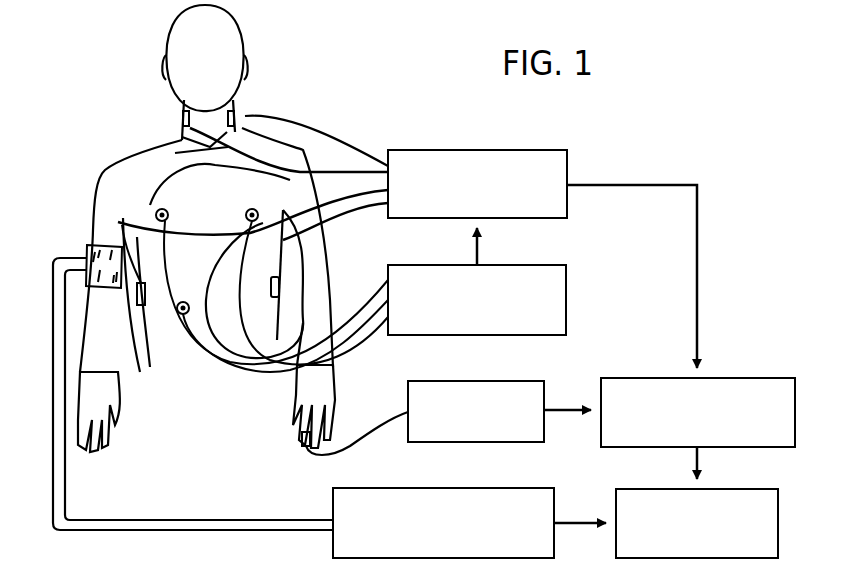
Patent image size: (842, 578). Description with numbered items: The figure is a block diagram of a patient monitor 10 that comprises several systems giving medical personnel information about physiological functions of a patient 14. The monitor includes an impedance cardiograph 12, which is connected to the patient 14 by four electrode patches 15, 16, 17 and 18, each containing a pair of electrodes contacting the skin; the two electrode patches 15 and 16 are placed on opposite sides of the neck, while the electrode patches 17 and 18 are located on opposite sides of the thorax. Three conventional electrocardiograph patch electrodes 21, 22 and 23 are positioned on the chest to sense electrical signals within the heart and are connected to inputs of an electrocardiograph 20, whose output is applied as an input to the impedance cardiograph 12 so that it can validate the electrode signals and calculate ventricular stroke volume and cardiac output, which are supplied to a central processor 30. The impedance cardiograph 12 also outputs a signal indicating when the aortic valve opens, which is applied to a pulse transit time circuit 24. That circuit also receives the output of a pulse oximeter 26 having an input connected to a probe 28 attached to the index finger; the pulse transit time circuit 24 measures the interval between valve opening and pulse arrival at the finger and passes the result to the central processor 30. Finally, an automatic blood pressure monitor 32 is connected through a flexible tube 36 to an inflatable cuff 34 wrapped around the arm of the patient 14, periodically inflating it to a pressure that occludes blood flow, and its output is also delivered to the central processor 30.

The patient monitor 10 is at (622, 140).
The impedance cardiograph 12 is at (448, 150).
The patient 14 is at (90, 170).
The electrode patch 15 is at (183, 108).
The electrode patch 16 is at (236, 107).
The electrode patch 17 is at (146, 342).
The electrode patch 18 is at (266, 286).
The electrocardiograph 20 is at (532, 265).
The electrocardiograph patch electrode 21 is at (164, 207).
The electrocardiograph patch electrode 22 is at (255, 208).
The electrocardiograph patch electrode 23 is at (183, 300).
The pulse transit time circuit 24 is at (667, 378).
The pulse oximeter 26 is at (430, 380).
The probe 28 is at (301, 441).
The central processor 30 is at (628, 488).
The blood pressure monitor 32 is at (418, 488).
The inflatable cuff 34 is at (90, 255).
The flexible tube 36 is at (268, 518).